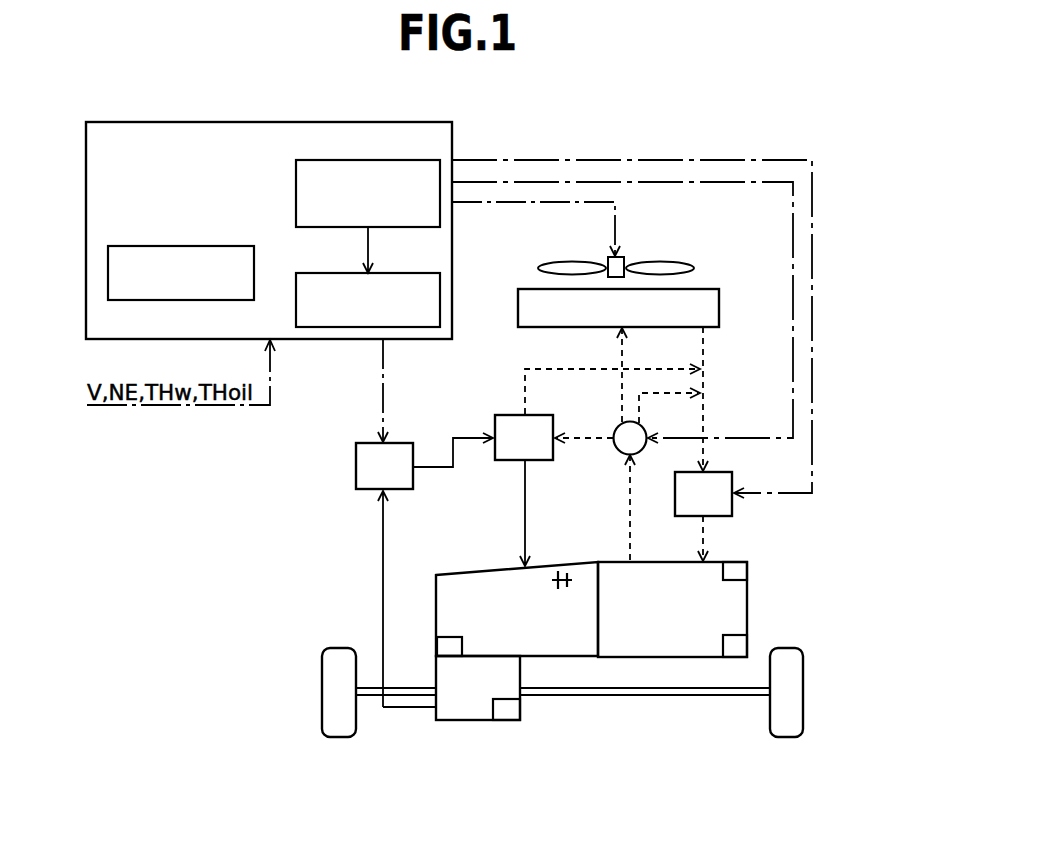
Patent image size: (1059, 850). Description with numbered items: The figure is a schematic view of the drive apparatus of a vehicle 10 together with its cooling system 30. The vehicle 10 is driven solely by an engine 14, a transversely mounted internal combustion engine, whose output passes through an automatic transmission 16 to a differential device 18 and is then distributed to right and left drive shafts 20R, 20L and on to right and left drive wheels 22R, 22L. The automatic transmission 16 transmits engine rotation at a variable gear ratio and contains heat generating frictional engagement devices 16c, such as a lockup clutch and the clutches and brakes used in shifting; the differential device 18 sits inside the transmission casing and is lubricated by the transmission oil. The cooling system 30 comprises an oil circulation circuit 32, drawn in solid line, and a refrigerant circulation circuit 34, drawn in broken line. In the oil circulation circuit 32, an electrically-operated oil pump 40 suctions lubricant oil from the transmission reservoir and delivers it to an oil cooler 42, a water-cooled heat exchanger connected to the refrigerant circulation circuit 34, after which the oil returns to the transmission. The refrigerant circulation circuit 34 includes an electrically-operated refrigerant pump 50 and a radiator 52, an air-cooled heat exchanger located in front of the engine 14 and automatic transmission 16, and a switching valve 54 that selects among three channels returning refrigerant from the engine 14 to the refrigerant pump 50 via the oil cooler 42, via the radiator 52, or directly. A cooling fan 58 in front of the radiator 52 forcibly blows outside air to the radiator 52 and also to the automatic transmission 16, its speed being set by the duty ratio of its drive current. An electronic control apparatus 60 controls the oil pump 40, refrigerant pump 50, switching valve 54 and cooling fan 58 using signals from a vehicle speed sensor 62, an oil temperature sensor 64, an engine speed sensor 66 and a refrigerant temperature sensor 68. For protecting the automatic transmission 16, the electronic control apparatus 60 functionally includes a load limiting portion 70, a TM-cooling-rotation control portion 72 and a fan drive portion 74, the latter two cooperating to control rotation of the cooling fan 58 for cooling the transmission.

The vehicle 10 is at (415, 748).
The engine 14 is at (664, 573).
The automatic transmission 16 is at (495, 577).
The frictional engagement devices 16c is at (568, 574).
The differential device 18 is at (465, 710).
The left drive shaft 20L is at (408, 688).
The right drive shaft 20R is at (650, 695).
The left drive wheel 22L is at (330, 665).
The right drive wheel 22R is at (795, 670).
The cooling system 30 is at (703, 137).
The oil circulation circuit 32 is at (339, 460).
The refrigerant circulation circuit 34 is at (745, 282).
The electrically-operated oil pump 40 is at (396, 448).
The oil cooler 42 is at (532, 418).
The electrically-operated refrigerant pump 50 is at (715, 480).
The radiator 52 is at (538, 297).
The switching valve 54 is at (617, 447).
The cooling fan 58 is at (657, 270).
The electronic control apparatus 60 is at (349, 130).
The vehicle speed sensor 62 is at (445, 647).
The oil temperature sensor 64 is at (512, 710).
The engine speed sensor 66 is at (735, 642).
The refrigerant temperature sensor 68 is at (735, 567).
The load limiting portion 70 is at (200, 250).
The TM-cooling-rotation control portion 72 is at (385, 168).
The fan drive portion 74 is at (386, 280).